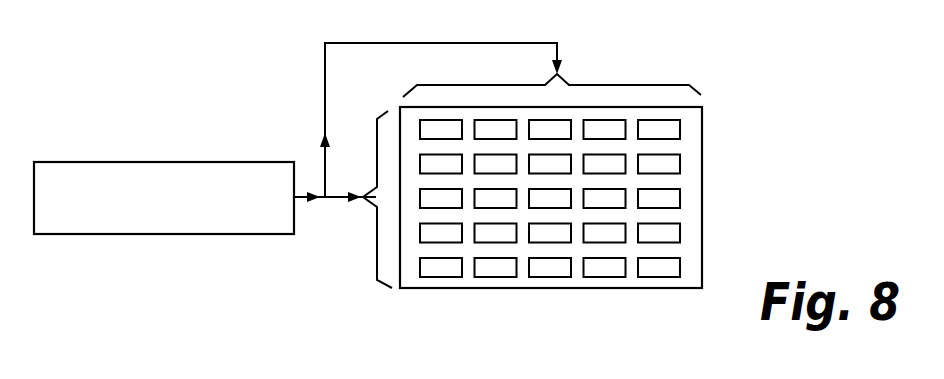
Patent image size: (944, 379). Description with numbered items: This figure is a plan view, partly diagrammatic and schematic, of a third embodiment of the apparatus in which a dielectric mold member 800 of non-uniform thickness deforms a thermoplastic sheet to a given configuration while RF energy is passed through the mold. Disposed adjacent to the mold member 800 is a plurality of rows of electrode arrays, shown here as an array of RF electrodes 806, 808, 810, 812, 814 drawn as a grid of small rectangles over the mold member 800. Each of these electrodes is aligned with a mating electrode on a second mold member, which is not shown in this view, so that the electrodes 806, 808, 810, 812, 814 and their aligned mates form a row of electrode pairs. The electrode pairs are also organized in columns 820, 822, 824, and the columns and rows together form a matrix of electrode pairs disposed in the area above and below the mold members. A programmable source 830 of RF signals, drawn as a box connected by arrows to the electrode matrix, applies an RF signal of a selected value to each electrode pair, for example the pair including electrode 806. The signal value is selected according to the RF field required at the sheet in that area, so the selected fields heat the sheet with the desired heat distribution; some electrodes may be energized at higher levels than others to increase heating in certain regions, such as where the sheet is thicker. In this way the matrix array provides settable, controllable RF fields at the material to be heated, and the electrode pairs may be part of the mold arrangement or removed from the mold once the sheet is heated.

The dielectric mold member 800 is at (700, 289).
The RF electrode 806 is at (660, 272).
The RF electrode 808 is at (594, 272).
The RF electrode 810 is at (541, 272).
The RF electrode 812 is at (492, 272).
The RF electrode 814 is at (432, 272).
The column of electrode pairs 820 is at (660, 68).
The column of electrode pairs 822 is at (602, 68).
The column of electrode pairs 824 is at (440, 68).
The programmable source 830 is at (152, 161).